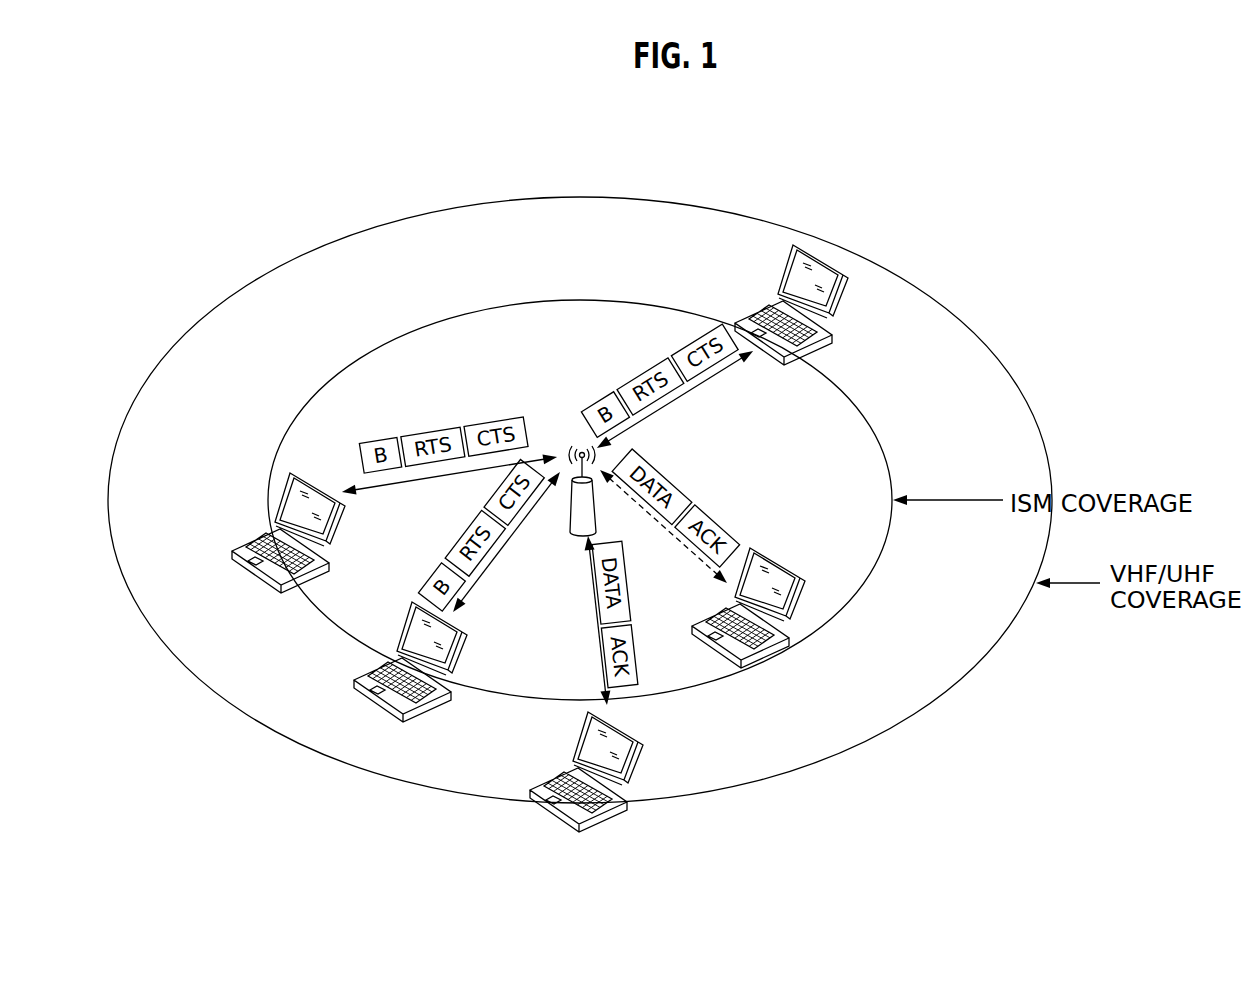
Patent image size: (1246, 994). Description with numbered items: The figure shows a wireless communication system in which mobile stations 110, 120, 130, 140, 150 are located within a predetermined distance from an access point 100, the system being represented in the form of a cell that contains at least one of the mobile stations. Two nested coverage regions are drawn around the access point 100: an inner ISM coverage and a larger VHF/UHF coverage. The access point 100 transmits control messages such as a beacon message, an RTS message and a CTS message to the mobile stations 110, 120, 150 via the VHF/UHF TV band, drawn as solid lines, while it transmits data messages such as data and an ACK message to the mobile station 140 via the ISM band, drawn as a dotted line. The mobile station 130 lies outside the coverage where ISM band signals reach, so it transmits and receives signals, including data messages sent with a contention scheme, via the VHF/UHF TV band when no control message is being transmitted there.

The access point 100 is at (580, 527).
The mobile station 110 is at (253, 587).
The mobile station 120 is at (462, 657).
The mobile station 130 is at (642, 767).
The mobile station 140 is at (803, 602).
The mobile station 150 is at (837, 298).